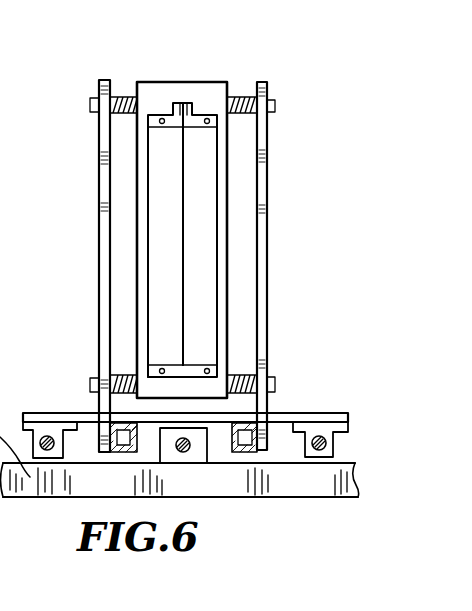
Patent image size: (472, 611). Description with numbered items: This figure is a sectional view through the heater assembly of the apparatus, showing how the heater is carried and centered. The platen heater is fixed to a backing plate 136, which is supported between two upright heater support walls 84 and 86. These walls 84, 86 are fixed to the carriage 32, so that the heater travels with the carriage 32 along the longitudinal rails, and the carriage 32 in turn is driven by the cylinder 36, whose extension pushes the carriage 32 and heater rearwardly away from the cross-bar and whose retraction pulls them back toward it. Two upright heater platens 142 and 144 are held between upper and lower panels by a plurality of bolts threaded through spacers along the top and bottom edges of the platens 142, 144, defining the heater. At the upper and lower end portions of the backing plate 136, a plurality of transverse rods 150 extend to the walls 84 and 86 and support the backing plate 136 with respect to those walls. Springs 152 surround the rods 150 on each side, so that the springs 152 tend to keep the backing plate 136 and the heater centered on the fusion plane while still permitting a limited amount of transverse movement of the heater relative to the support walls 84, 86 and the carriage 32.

The carriage 32 is at (318, 415).
The cylinder 36 is at (195, 442).
The upright heater support wall 84 is at (105, 248).
The upright heater support wall 86 is at (262, 267).
The backing plate 136 is at (163, 92).
The upright heater platen 142 is at (158, 170).
The upright heater platen 144 is at (203, 182).
The transverse rods 150 is at (275, 105).
The springs 152 is at (122, 97).